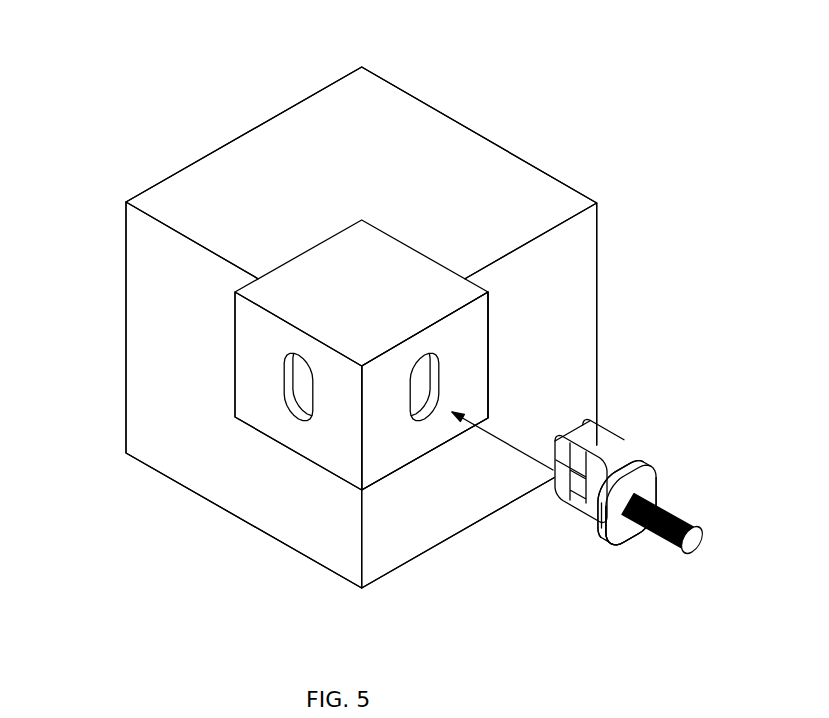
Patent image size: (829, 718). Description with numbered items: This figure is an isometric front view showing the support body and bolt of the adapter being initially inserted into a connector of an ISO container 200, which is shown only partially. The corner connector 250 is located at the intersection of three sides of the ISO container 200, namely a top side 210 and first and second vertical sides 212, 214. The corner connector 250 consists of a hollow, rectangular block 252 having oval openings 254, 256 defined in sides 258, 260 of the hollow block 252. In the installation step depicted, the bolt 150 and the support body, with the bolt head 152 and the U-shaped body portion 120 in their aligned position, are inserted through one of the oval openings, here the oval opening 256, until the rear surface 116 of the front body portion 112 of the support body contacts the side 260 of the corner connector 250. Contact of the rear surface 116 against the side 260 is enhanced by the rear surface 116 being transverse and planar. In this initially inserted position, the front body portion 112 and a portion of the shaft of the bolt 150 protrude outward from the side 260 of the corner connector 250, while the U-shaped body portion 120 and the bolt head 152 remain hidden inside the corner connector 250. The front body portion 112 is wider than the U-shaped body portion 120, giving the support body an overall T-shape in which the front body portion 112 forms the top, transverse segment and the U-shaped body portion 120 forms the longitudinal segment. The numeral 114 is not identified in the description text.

The ISO container 200 is at (460, 117).
The top side 210 is at (378, 125).
The first vertical side 212 is at (157, 286).
The second vertical side 214 is at (585, 323).
The corner connector 250 is at (420, 247).
The hollow rectangular block 252 is at (468, 333).
The oval opening 254 is at (300, 402).
The oval opening 256 is at (417, 400).
The side 258 is at (252, 380).
The side 260 is at (470, 386).
The bolt head 152 is at (585, 437).
The U-shaped body portion 120 is at (612, 450).
The rear surface 116 is at (593, 530).
The flange front face 114 is at (628, 537).
The front body portion 112 is at (610, 556).
The bolt 150 is at (685, 515).